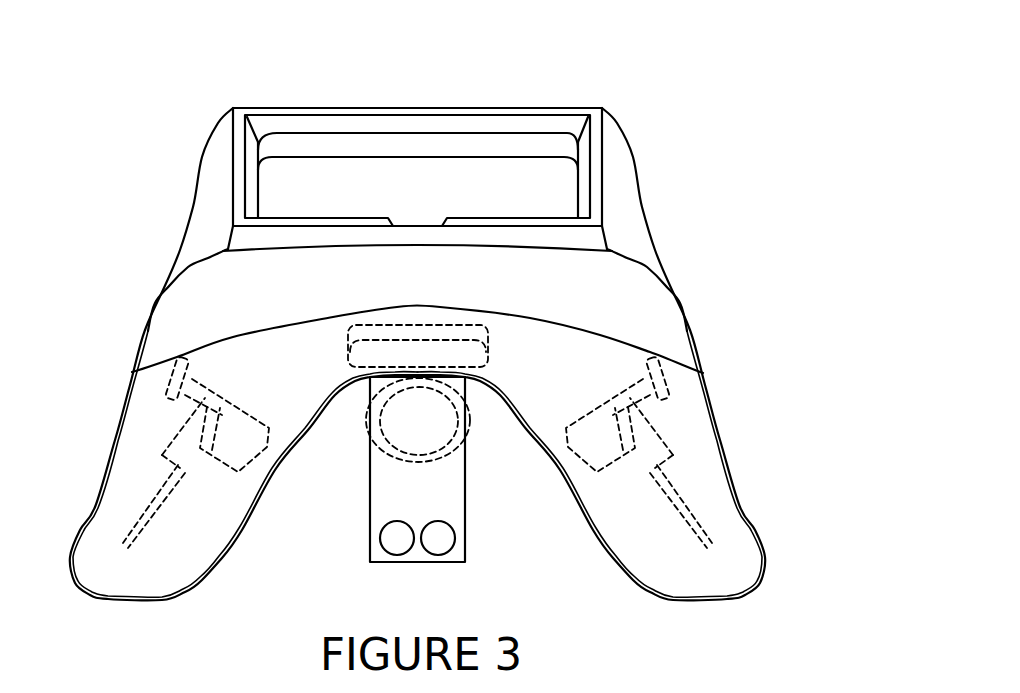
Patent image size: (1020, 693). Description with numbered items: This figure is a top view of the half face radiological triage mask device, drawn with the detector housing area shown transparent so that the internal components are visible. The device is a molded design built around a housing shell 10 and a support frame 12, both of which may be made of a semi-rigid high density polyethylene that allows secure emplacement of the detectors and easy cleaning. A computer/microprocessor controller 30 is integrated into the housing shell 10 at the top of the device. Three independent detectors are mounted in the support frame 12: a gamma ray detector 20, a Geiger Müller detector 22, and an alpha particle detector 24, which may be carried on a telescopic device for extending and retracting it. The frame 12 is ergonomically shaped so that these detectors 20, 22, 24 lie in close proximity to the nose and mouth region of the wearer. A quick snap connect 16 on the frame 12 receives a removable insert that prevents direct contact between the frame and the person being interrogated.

The housing shell 10 is at (583, 302).
The support frame 12 is at (133, 473).
The quick snap connect 16 is at (413, 433).
The gamma ray detector 20 is at (623, 436).
The Geiger Müller detector 22 is at (463, 350).
The alpha particle detector 24 is at (398, 538).
The computer/microprocessor controller 30 is at (480, 180).